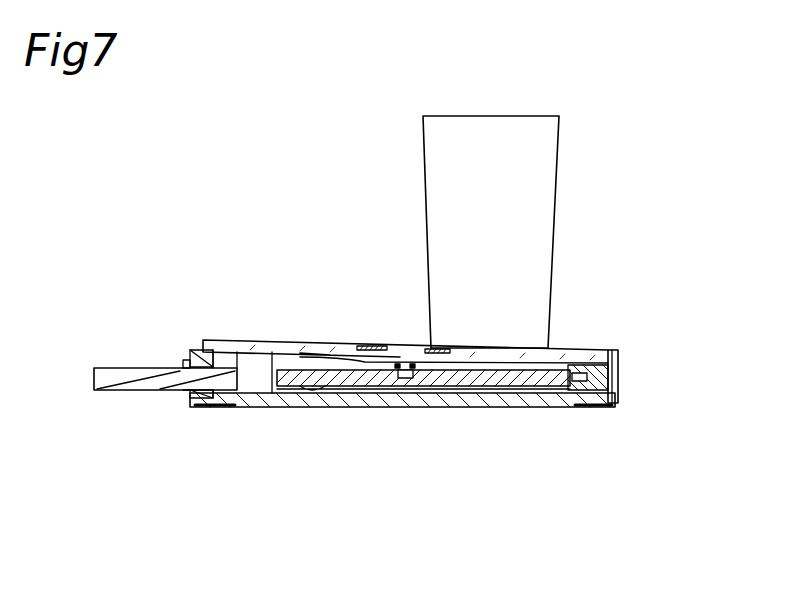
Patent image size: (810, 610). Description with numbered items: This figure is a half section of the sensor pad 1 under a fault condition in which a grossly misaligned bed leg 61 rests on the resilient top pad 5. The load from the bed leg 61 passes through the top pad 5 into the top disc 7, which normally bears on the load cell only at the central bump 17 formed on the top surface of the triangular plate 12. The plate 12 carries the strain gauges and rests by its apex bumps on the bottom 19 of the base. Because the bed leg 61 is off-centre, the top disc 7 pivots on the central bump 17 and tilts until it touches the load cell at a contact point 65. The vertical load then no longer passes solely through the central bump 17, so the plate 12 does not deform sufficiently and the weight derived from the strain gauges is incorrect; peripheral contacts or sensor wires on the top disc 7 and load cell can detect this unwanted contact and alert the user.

The sensor pad 1 is at (648, 342).
The top pad 5 is at (363, 347).
The top disc 7 is at (260, 343).
The triangular plate 12 is at (510, 380).
The central bump 17 is at (400, 365).
The bottom 19 is at (295, 410).
The bed leg 61 is at (516, 290).
The contact point 65 is at (618, 377).